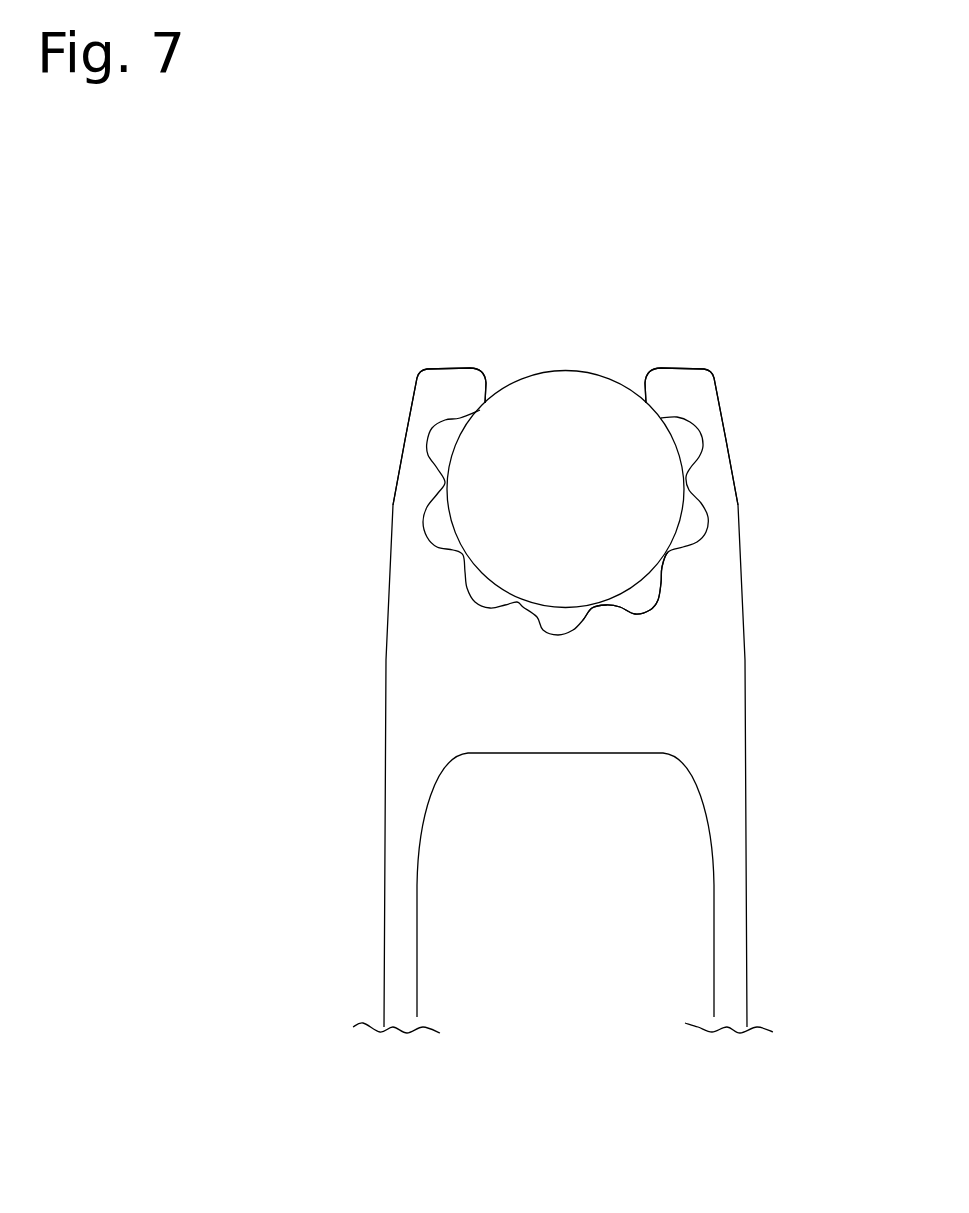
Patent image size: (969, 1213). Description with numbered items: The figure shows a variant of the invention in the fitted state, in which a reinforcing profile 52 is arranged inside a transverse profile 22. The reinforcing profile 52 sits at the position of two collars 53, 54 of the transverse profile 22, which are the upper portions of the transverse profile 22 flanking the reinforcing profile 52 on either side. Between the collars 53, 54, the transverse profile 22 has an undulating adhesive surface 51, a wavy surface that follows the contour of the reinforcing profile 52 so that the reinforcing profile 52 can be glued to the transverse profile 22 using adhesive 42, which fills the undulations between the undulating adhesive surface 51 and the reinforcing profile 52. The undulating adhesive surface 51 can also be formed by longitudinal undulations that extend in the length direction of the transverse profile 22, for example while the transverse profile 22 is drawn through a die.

The transverse profile 22 is at (727, 944).
The adhesive 42 is at (682, 432).
The undulating adhesive surface 51 is at (655, 610).
The reinforcing profile 52 is at (590, 405).
The collar 53 is at (418, 487).
The collar 54 is at (715, 483).